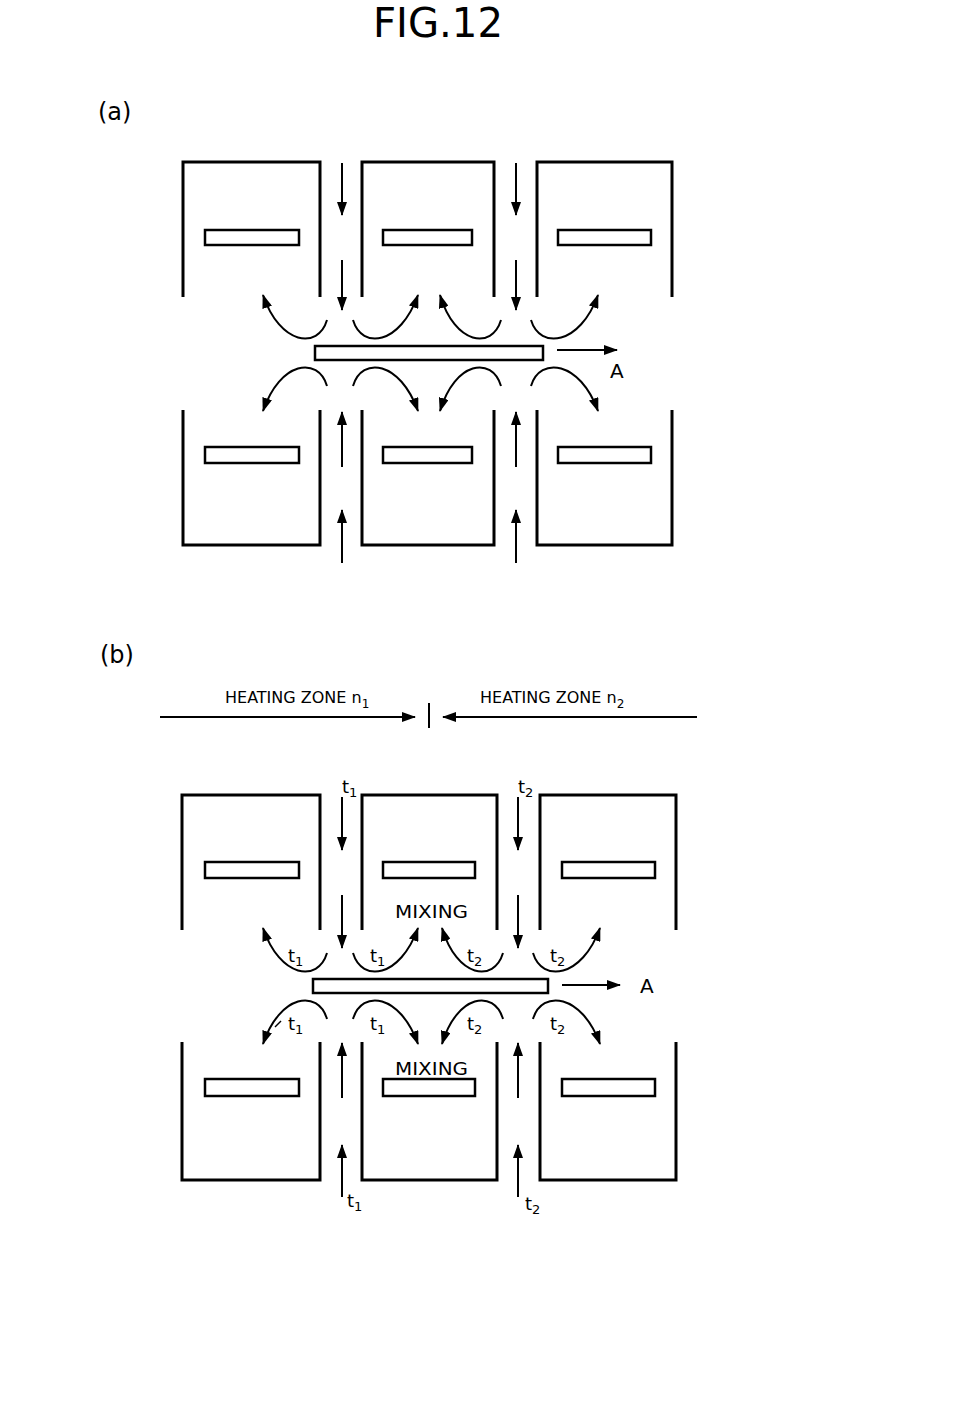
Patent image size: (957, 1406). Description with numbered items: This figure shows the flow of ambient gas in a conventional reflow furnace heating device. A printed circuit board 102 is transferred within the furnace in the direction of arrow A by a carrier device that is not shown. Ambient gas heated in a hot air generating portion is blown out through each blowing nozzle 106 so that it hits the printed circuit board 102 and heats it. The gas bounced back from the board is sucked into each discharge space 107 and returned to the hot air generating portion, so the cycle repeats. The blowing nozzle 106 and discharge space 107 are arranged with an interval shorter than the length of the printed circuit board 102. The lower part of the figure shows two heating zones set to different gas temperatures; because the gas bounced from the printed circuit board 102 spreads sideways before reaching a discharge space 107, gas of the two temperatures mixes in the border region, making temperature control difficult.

The printed circuit board 102 is at (315, 353).
The blowing nozzle 106 is at (330, 187).
The discharge space 107 is at (258, 187).